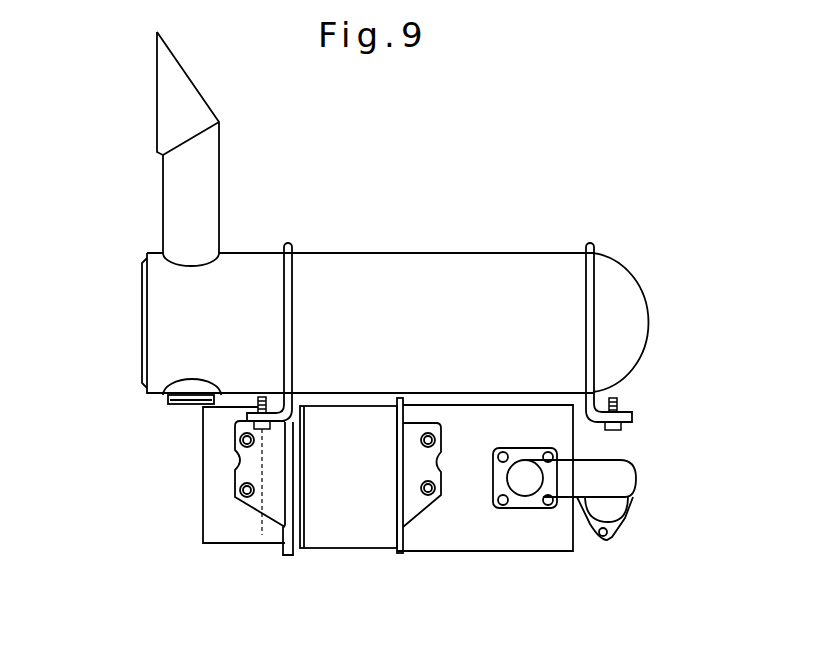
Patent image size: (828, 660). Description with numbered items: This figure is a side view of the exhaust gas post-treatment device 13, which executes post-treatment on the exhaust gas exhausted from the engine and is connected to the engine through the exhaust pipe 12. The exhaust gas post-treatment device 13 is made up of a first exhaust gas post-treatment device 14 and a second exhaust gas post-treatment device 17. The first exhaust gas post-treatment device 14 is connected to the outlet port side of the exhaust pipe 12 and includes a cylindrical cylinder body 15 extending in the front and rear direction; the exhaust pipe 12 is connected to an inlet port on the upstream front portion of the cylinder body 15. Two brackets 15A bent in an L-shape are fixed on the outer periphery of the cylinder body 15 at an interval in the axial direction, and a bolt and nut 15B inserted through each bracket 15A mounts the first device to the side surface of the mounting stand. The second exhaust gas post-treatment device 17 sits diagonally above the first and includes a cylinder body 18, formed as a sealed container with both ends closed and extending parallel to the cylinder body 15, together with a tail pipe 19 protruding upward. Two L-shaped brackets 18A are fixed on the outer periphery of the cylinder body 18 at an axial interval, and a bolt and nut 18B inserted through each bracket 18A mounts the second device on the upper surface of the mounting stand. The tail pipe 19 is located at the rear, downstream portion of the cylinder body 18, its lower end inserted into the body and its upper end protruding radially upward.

The exhaust pipe 12 is at (618, 477).
The exhaust gas post-treatment device 13 is at (352, 221).
The first exhaust gas post-treatment device 14 is at (380, 549).
The cylinder body 15 is at (350, 505).
The bracket 15A is at (277, 490).
The bolt and nut 15B is at (238, 495).
The second exhaust gas post-treatment device 17 is at (522, 253).
The cylinder body 18 is at (387, 282).
The bracket 18A is at (287, 243).
The bolt and nut 18B is at (250, 412).
The tail pipe 19 is at (173, 127).